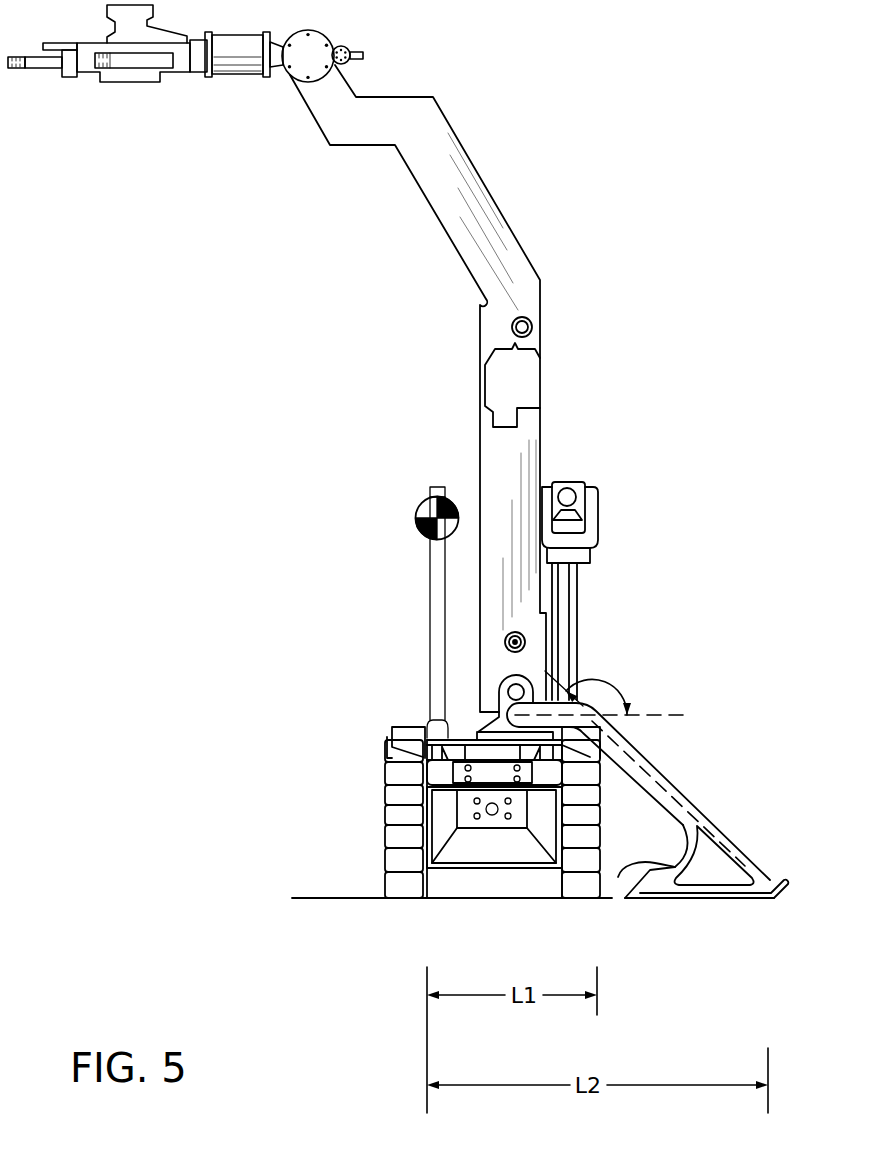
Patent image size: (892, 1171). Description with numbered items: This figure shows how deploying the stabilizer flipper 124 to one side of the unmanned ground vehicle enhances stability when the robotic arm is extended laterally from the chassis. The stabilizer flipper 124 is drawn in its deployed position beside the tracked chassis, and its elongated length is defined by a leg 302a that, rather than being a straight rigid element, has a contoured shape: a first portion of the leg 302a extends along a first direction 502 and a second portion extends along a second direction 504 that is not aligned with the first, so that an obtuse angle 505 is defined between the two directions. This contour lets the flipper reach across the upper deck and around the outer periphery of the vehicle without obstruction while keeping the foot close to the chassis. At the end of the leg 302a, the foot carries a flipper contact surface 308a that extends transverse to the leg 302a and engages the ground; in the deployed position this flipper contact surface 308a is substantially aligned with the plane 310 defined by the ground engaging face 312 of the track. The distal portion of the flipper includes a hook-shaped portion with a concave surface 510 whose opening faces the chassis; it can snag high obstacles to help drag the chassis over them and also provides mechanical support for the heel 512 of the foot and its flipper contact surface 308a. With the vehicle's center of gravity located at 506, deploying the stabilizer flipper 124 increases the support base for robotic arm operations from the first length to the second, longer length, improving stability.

The stabilizer flipper 124 is at (729, 870).
The leg 302a is at (690, 817).
The flipper contact surface 308a is at (706, 931).
The plane 310 is at (308, 892).
The ground engaging face 312 is at (400, 899).
The first direction 502 is at (662, 715).
The second direction 504 is at (667, 795).
The angle 505 is at (600, 680).
The center of gravity 506 is at (415, 517).
The concave surface 510 is at (618, 877).
The heel 512 is at (653, 900).